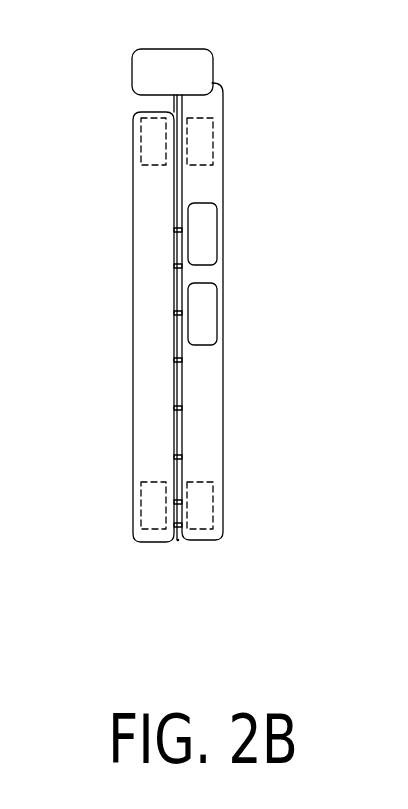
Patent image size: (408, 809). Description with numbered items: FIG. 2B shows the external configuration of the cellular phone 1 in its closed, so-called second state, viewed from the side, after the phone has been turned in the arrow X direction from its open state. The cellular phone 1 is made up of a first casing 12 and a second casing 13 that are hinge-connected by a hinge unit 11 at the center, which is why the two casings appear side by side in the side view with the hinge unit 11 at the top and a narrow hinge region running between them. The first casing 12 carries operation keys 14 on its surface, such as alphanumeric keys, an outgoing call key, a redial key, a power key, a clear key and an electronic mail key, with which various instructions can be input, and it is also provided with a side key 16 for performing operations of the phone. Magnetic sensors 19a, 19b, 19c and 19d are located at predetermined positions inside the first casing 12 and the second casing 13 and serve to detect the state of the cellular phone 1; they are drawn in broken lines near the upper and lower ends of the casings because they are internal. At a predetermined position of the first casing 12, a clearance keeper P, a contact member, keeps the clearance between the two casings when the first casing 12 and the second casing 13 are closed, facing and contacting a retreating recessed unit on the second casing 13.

The cellular phone 1 is at (253, 436).
The hinge unit 11 is at (213, 62).
The first casing 12 is at (224, 182).
The second casing 13 is at (133, 212).
The operation keys 14 is at (182, 382).
The side key 16 is at (218, 233).
The magnetic sensor 19a is at (133, 510).
The magnetic sensor 19b is at (223, 512).
The magnetic sensor 19c is at (133, 143).
The magnetic sensor 19d is at (218, 146).
The clearance keeper P is at (178, 541).